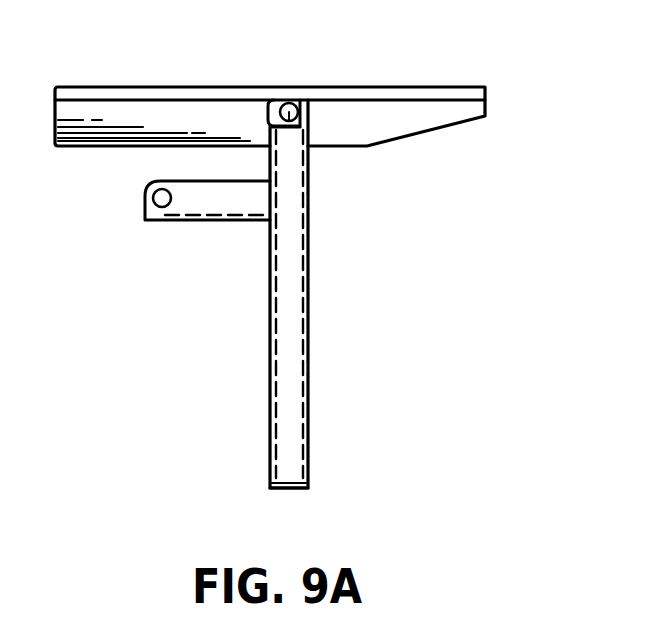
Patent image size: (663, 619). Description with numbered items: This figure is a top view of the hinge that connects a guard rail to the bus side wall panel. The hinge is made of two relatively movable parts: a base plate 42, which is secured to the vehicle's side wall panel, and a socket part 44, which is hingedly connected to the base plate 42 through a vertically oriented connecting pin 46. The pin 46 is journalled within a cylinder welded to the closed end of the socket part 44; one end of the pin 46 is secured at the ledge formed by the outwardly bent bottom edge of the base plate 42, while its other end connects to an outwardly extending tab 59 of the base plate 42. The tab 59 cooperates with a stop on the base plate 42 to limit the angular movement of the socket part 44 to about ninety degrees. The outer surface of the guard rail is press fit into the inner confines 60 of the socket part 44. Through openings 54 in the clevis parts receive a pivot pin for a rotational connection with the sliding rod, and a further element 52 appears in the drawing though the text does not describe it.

The base plate 42 is at (415, 97).
The socket part 44 is at (308, 331).
The connecting pin 46 is at (289, 103).
The inner rod 52 is at (270, 375).
The through openings 54 is at (150, 192).
The tab 59 is at (305, 103).
The inner confines 60 is at (288, 488).